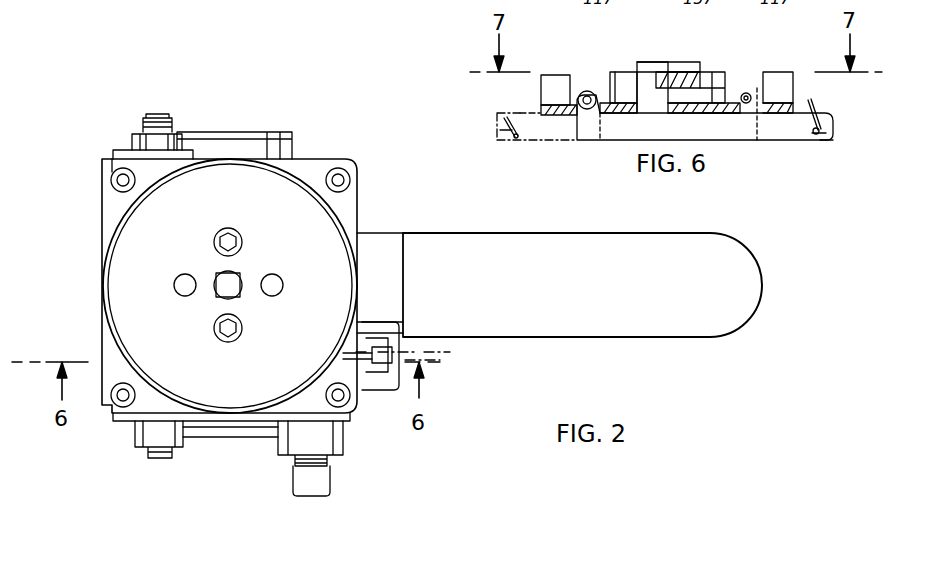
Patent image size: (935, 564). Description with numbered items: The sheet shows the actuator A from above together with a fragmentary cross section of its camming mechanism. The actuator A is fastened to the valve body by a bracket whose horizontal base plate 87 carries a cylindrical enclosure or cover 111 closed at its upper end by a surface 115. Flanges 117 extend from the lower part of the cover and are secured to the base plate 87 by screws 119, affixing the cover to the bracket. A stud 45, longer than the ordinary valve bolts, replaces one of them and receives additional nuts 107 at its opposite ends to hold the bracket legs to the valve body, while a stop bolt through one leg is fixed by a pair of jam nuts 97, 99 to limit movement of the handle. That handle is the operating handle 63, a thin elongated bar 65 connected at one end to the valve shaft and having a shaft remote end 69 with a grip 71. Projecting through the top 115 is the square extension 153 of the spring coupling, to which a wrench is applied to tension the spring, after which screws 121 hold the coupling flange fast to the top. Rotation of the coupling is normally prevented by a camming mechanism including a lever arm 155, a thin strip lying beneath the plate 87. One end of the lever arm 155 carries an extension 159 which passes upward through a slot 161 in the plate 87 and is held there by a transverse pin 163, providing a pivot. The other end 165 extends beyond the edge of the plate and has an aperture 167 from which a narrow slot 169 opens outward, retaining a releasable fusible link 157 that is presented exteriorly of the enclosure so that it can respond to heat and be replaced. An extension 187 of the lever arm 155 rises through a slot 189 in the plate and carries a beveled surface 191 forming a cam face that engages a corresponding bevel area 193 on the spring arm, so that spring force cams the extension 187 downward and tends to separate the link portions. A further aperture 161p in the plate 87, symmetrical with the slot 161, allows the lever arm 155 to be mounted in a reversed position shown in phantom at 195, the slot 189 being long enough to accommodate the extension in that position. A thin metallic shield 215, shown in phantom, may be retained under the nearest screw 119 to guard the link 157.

In FIG. 2, the stud 45 is at (156, 114).
In FIG. 2, the additional nuts 107 is at (130, 140).
In FIG. 2, the screws 119 is at (110, 175).
In FIG. 2, the flanges 117 is at (102, 196).
In FIG. 2, the top surface 115 is at (104, 254).
In FIG. 2, the enclosure or cover 111 is at (108, 282).
In FIG. 2, the screws 121 is at (220, 236).
In FIG. 2, the extension of coupling 153 is at (235, 282).
In FIG. 2, the elongated bar 65 is at (376, 233).
In FIG. 2, the operating handle 63 is at (452, 233).
In FIG. 2, the grip 71 is at (652, 233).
In FIG. 2, the shaft remote end 69 is at (762, 278).
In FIG. 2, the releasable link 157 is at (400, 376).
In FIG. 6, the releasable link 157 is at (580, 128).
In FIG. 2, the shield 215 is at (419, 354).
In FIG. 2, the jam nut 99 is at (344, 455).
In FIG. 2, the jam nut 97 is at (304, 498).
In FIG. 2, the actuator A is at (362, 186).
In FIG. 6, the pin 163 is at (584, 92).
In FIG. 6, the extension 159 is at (587, 90).
In FIG. 6, the slot 161 is at (626, 100).
In FIG. 6, the lever arm 155 is at (620, 140).
In FIG. 6, the bevel area 193 is at (654, 72).
In FIG. 6, the beveled surface 191 is at (672, 86).
In FIG. 6, the extension 187 is at (705, 90).
In FIG. 6, the further aperture 161p is at (746, 92).
In FIG. 6, the slot 189 is at (702, 116).
In FIG. 6, the narrow slot 169 is at (826, 128).
In FIG. 6, the aperture 167 is at (812, 136).
In FIG. 6, the other end of arm 165 is at (815, 142).
In FIG. 6, the base plate 87 is at (540, 108).
In FIG. 6, the reversed lever arm position 195 is at (512, 140).